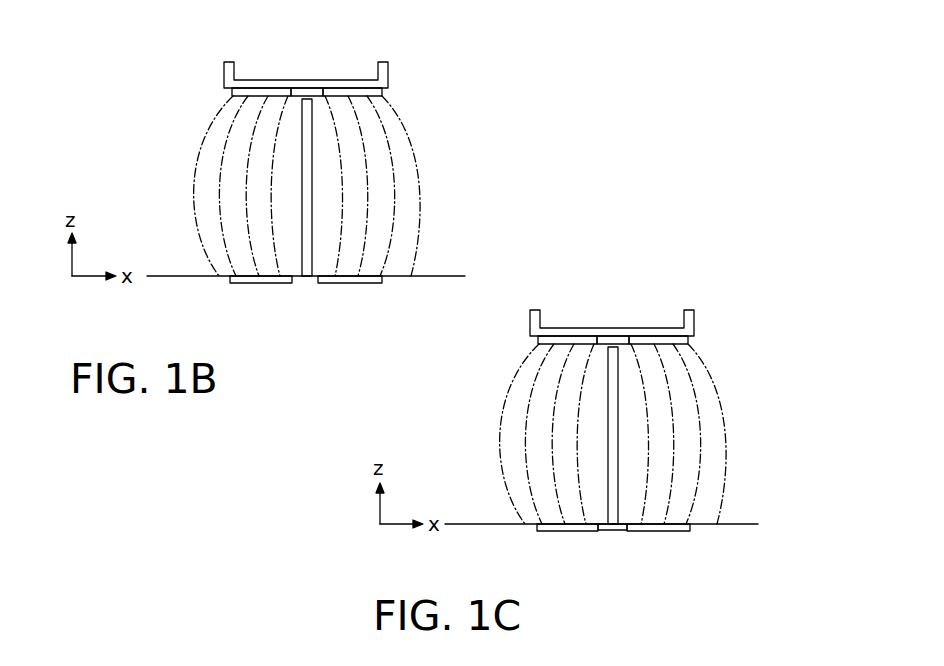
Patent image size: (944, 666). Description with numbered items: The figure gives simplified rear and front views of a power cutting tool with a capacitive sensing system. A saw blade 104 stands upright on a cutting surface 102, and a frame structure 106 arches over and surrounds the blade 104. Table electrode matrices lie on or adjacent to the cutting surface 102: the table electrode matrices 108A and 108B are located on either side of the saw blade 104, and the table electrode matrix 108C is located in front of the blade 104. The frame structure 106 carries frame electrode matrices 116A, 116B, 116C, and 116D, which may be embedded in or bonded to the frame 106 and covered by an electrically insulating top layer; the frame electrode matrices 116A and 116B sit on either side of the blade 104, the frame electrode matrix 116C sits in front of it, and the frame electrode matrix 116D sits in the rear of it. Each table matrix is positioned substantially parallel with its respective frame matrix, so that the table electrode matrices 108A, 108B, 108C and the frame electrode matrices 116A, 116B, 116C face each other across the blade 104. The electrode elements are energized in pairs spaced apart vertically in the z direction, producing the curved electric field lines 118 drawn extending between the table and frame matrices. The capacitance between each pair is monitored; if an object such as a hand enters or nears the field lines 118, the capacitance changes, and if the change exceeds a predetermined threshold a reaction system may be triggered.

In FIG. 1B, the cutting surface 102 is at (427, 276).
In FIG. 1C, the cutting surface 102 is at (718, 524).
In FIG. 1B, the saw blade 104 is at (302, 208).
In FIG. 1C, the saw blade 104 is at (618, 462).
In FIG. 1B, the frame structure 106 is at (325, 58).
In FIG. 1C, the frame structure 106 is at (679, 290).
In FIG. 1B, the table electrode matrix 108A is at (260, 283).
In FIG. 1C, the table electrode matrix 108A is at (577, 532).
In FIG. 1B, the table electrode matrix 108B is at (342, 283).
In FIG. 1C, the table electrode matrix 108B is at (675, 531).
In FIG. 1C, the table electrode matrix 108C is at (612, 531).
In FIG. 1B, the frame electrode matrix 116A is at (229, 113).
In FIG. 1C, the frame electrode matrix 116A is at (530, 360).
In FIG. 1B, the frame electrode matrix 116B is at (357, 102).
In FIG. 1C, the frame electrode matrix 116B is at (683, 348).
In FIG. 1C, the frame electrode matrix 116C is at (627, 344).
In FIG. 1B, the frame electrode matrix 116D is at (291, 97).
In FIG. 1B, the electric field lines 118 is at (434, 156).
In FIG. 1C, the electric field lines 118 is at (744, 380).